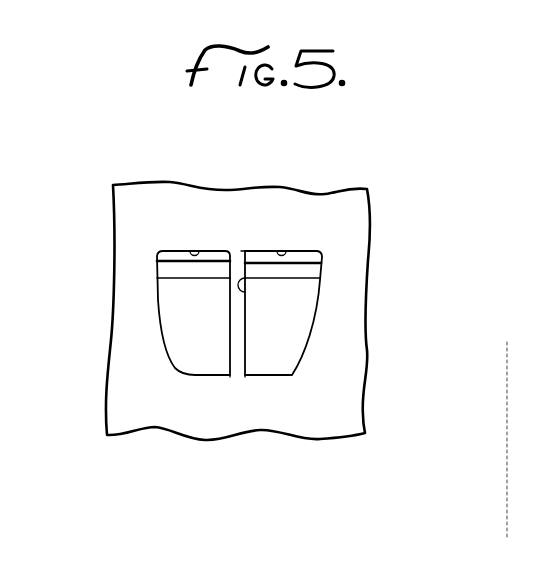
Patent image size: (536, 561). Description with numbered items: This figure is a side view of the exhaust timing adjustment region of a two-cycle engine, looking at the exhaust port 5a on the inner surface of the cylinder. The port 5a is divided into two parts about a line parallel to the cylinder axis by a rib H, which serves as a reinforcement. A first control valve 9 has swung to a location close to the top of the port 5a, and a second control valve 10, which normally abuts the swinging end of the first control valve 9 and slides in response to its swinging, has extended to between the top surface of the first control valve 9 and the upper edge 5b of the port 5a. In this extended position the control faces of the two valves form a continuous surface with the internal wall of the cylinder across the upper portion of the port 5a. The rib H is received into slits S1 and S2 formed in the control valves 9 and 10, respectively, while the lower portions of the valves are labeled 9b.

The exhaust port 5a is at (208, 362).
The upper edge of the port 5b is at (199, 250).
The second control valve 10 is at (157, 252).
The first control valve 9 is at (157, 272).
The lower portion of layer 9 9b is at (200, 280).
The slit S1 is at (247, 295).
The slit S2 is at (245, 257).
The rib H is at (237, 353).